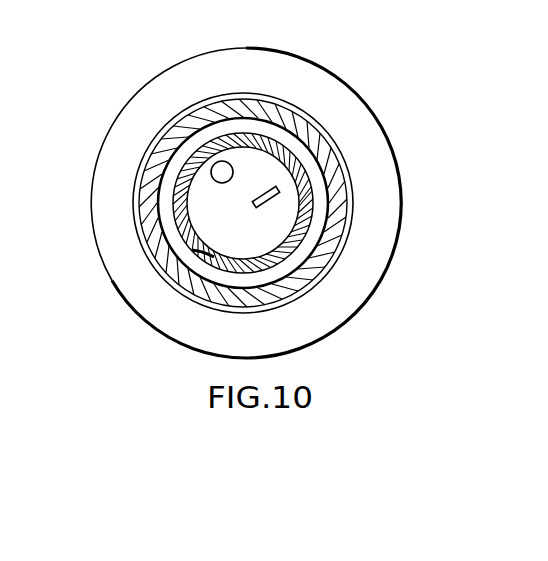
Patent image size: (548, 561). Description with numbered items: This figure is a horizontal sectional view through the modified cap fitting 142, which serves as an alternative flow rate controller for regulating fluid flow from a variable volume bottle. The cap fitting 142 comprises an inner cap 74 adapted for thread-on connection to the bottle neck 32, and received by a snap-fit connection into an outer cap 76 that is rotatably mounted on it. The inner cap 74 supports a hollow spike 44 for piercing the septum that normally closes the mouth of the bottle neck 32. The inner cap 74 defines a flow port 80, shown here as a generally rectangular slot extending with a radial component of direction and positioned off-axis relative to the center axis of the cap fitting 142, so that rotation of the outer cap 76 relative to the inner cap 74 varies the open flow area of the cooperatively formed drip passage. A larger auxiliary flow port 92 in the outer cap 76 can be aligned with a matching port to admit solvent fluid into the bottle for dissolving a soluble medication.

The modified cap fitting 142 is at (378, 118).
The outer cap 76 is at (321, 73).
The inner cap 74 is at (207, 92).
The bottle neck 32 is at (150, 230).
The hollow spike 44 is at (202, 256).
The auxiliary flow port 92 is at (224, 171).
The flow port 80 is at (265, 208).